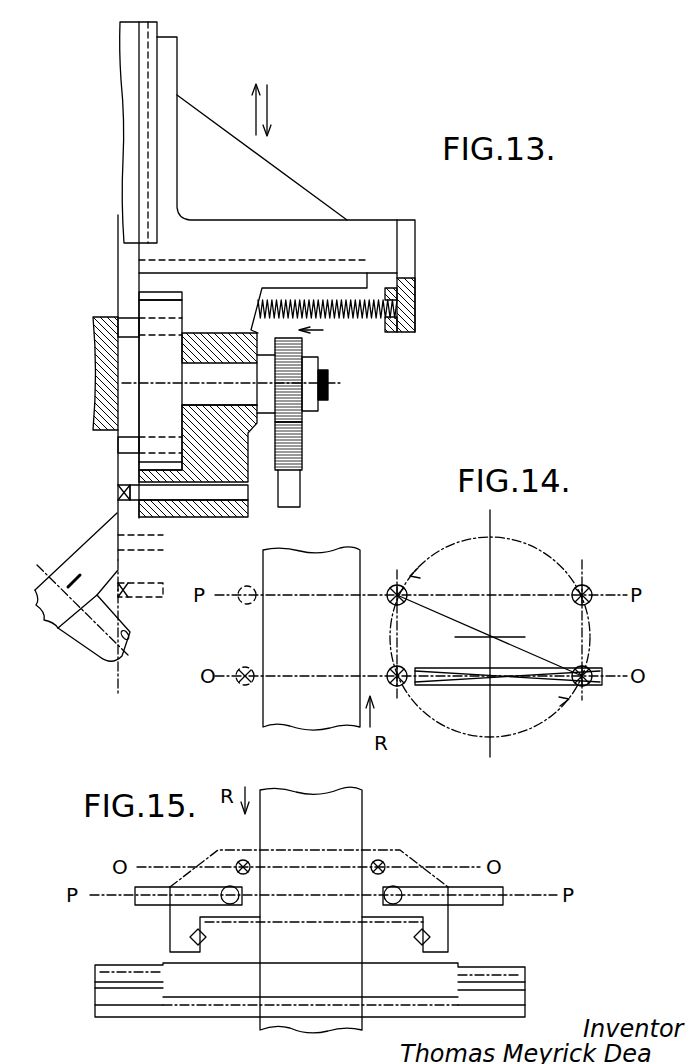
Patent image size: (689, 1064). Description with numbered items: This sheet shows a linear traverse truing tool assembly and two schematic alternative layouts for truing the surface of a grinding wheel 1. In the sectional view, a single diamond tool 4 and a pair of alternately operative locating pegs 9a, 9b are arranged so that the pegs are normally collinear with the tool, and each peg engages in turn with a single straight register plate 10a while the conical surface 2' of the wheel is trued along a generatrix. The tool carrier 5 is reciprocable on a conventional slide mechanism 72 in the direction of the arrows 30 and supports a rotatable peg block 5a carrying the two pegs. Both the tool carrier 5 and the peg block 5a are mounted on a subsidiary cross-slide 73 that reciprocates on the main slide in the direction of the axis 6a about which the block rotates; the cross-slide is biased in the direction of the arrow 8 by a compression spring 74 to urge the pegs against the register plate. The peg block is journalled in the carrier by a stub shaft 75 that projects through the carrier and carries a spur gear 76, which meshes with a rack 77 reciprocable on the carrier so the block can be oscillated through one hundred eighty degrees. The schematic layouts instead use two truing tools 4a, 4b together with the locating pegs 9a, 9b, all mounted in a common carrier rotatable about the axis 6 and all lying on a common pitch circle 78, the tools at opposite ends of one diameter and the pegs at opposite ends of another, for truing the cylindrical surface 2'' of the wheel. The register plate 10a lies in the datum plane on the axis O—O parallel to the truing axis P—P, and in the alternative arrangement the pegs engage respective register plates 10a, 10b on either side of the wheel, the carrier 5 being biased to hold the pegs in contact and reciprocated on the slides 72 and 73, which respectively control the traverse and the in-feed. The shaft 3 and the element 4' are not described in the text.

In FIG. 13, the grinding wheel 1 is at (76, 555).
In FIG. 14, the grinding wheel 1 is at (270, 637).
In FIG. 15, the grinding wheel 1 is at (318, 796).
In FIG. 13, the conical surface 2' is at (141, 568).
In FIG. 14, the conical surface 2' is at (311, 638).
In FIG. 15, the cylindrical surface 2'' is at (311, 910).
In FIG. 13, the shaft 3 is at (129, 369).
In FIG. 13, the diamond tool 4 is at (108, 496).
In FIG. 13, the pin 4' is at (146, 609).
In FIG. 14, the pin 4' is at (233, 692).
In FIG. 14, the truing tool 4a is at (395, 688).
In FIG. 15, the truing tool 4a is at (243, 860).
In FIG. 14, the truing tool 4b is at (585, 586).
In FIG. 15, the truing tool 4b is at (383, 861).
In FIG. 13, the tool carrier 5 is at (244, 476).
In FIG. 15, the tool carrier 5 is at (347, 851).
In FIG. 13, the peg block 5a is at (152, 428).
In FIG. 14, the axis 6 is at (492, 637).
In FIG. 13, the axis 6a is at (340, 386).
In FIG. 13, the arrow 8 is at (322, 331).
In FIG. 13, the locating peg 9a is at (130, 455).
In FIG. 14, the locating peg 9a is at (584, 688).
In FIG. 15, the locating peg 9a is at (400, 889).
In FIG. 13, the locating peg 9b is at (127, 322).
In FIG. 14, the locating peg 9b is at (395, 584).
In FIG. 15, the locating peg 9b is at (226, 888).
In FIG. 13, the register plate 10a is at (121, 363).
In FIG. 14, the register plate 10a is at (471, 684).
In FIG. 15, the register plate 10a is at (485, 904).
In FIG. 15, the register plate 10b is at (150, 903).
In FIG. 13, the arrows 30 is at (262, 85).
In FIG. 13, the slide mechanism 72 is at (290, 192).
In FIG. 15, the slide mechanism 72 is at (218, 985).
In FIG. 13, the cross-slide 73 is at (152, 283).
In FIG. 15, the cross-slide 73 is at (428, 940).
In FIG. 13, the compression spring 74 is at (348, 320).
In FIG. 13, the stub shaft 75 is at (212, 372).
In FIG. 13, the spur gear 76 is at (300, 419).
In FIG. 13, the rack 77 is at (292, 453).
In FIG. 14, the pitch circle 78 is at (533, 545).